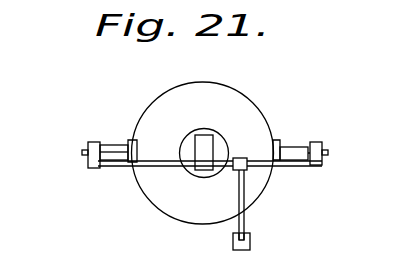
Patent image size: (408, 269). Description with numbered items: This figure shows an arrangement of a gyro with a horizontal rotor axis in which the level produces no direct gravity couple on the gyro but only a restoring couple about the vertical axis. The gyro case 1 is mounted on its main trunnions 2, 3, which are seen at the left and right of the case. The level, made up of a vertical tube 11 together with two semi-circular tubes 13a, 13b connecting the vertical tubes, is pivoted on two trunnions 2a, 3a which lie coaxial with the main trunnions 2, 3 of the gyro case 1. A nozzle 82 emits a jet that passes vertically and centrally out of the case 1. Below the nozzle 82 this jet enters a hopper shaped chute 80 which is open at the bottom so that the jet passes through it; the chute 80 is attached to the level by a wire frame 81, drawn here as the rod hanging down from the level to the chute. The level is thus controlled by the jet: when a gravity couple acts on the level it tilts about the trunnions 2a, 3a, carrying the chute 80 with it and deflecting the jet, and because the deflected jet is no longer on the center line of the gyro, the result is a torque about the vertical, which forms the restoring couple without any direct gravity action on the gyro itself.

The gyro case 1 is at (253, 101).
The vertical tube 11 is at (206, 133).
The trunnion 2 is at (120, 143).
The trunnion 2a is at (82, 153).
The trunnion 3 is at (294, 147).
The trunnion 3a is at (328, 152).
The semi-circular tube 13a is at (162, 167).
The semi-circular tube 13b is at (292, 170).
The hopper shaped chute 80 is at (250, 245).
The wire frame 81 is at (238, 203).
The nozzle 82 is at (246, 223).